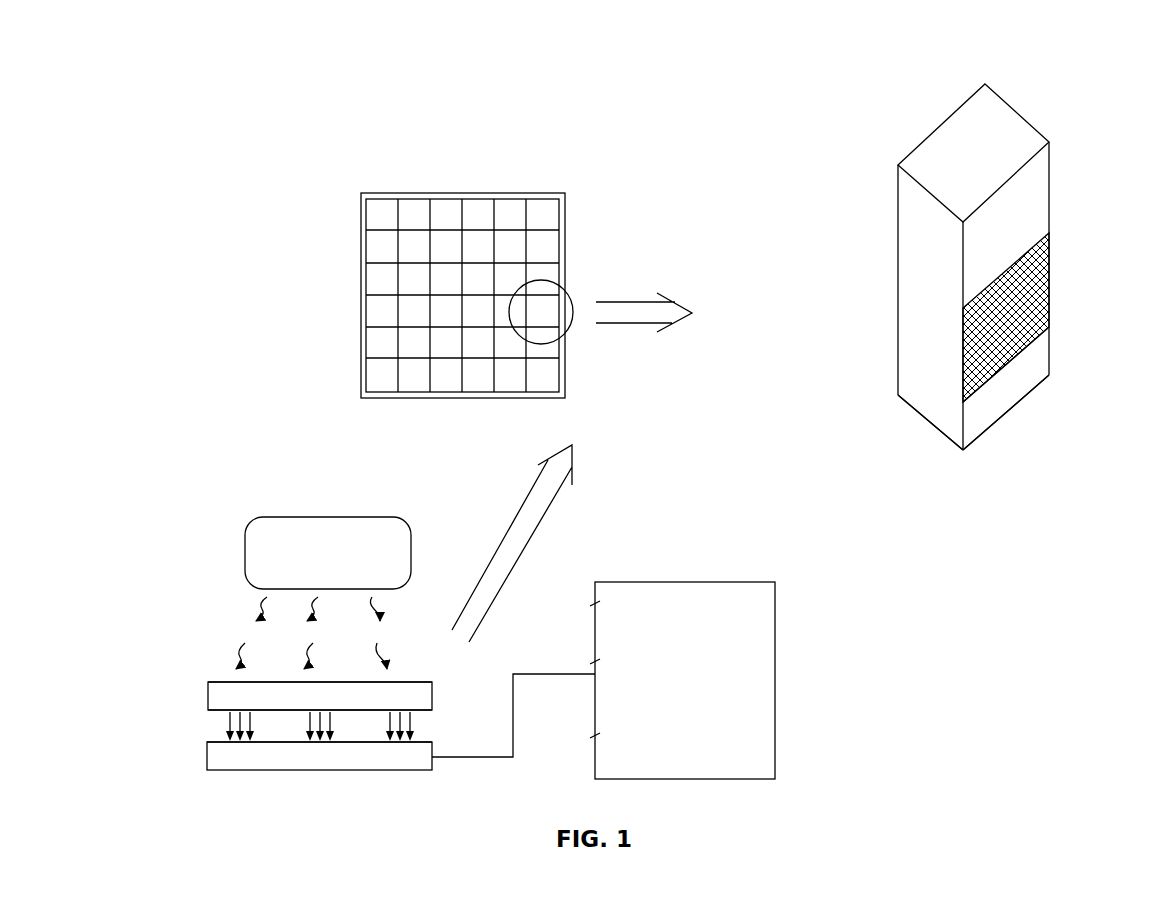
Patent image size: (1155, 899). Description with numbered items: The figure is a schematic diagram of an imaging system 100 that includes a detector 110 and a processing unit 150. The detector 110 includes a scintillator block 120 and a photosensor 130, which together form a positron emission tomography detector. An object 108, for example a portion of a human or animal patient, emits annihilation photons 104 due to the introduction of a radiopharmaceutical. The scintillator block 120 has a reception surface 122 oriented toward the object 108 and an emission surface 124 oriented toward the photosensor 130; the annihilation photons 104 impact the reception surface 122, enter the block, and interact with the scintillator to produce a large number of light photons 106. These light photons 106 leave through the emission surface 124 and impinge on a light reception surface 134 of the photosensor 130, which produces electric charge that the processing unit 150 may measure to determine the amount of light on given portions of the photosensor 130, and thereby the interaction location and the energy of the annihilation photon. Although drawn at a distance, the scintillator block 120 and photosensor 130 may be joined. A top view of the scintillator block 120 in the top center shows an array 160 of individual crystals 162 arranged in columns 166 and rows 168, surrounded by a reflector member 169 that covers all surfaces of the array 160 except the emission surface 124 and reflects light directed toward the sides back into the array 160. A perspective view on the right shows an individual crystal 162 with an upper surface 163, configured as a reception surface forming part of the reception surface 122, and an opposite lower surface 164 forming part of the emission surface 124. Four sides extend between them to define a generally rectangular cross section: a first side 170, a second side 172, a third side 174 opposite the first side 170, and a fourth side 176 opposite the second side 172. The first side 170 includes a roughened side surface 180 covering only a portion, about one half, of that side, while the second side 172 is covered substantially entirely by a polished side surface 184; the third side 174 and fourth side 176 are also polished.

The imaging system 100 is at (107, 58).
The annihilation photons 104 is at (380, 608).
The light photons 106 is at (418, 722).
The object 108 is at (362, 518).
The detector 110 is at (128, 720).
The scintillator block 120 is at (202, 695).
The reception surface 122 is at (410, 683).
The emission surface 124 is at (218, 712).
The photosensor 130 is at (200, 757).
The light reception surface 134 is at (415, 740).
The processing unit 150 is at (645, 581).
The array 160 is at (338, 161).
The crystal 162 is at (548, 219).
The upper surface 163 is at (992, 140).
The lower surface 164 is at (929, 457).
The columns 166 is at (510, 198).
The rows 168 is at (365, 370).
The reflector member 169 is at (514, 399).
The first side 170 is at (1030, 372).
The second side 172 is at (925, 395).
The third side 174 is at (886, 210).
The fourth side 176 is at (1060, 190).
The roughened side surface 180 is at (1050, 280).
The polished side surface 184 is at (905, 291).